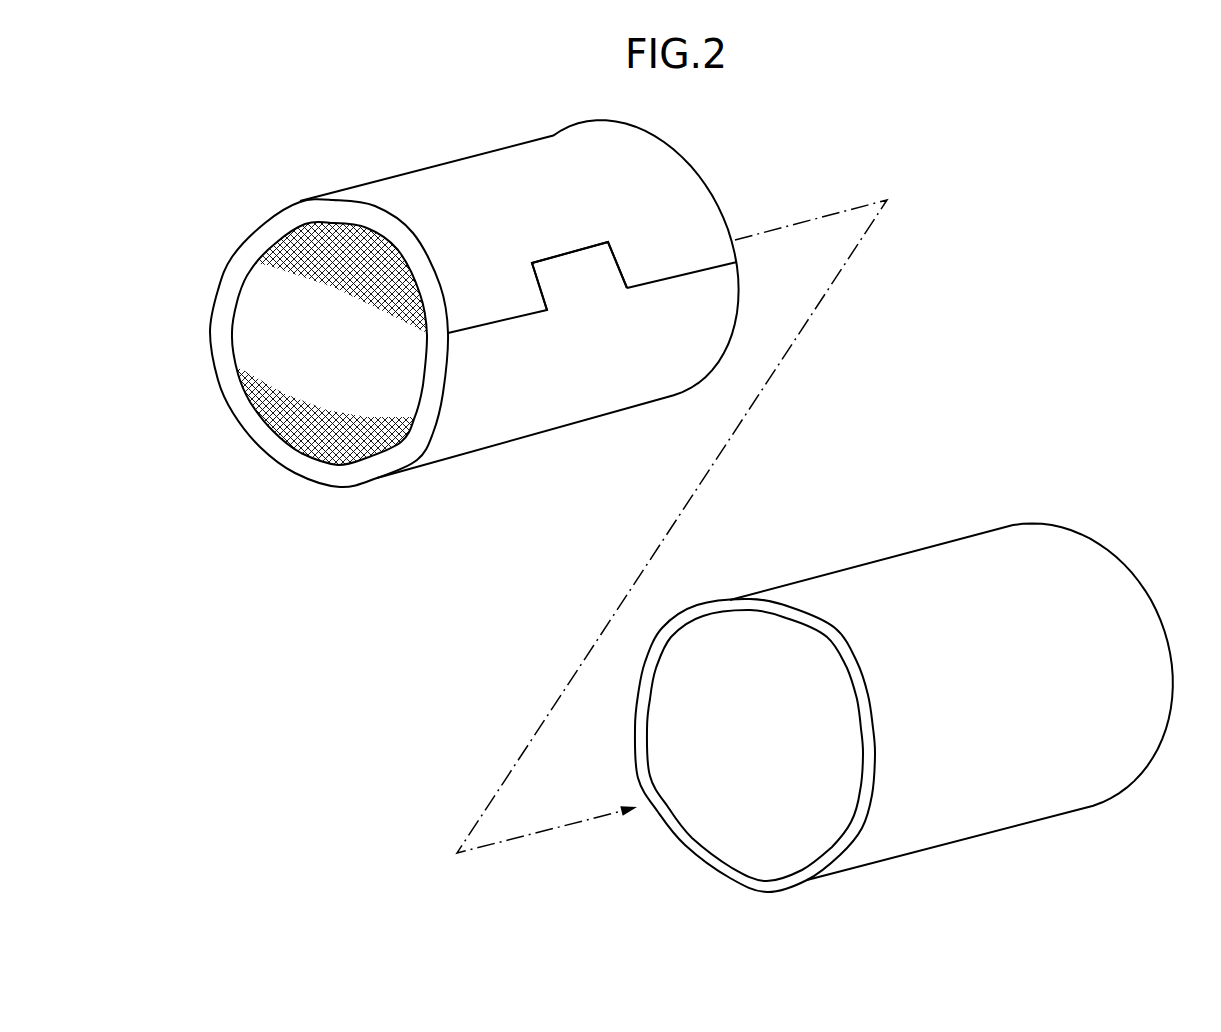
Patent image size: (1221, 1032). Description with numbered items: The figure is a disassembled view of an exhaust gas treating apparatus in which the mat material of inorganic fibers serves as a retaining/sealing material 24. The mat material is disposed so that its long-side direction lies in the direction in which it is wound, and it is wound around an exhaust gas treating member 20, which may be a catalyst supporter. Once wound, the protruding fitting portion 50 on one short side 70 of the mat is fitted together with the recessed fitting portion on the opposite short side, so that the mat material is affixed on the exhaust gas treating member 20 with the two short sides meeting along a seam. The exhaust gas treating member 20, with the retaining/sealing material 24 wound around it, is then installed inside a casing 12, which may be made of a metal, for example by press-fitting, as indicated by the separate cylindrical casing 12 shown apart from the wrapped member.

The casing 12 is at (985, 817).
The exhaust gas treating member 20 is at (252, 331).
The retaining/sealing material 24 is at (553, 143).
The protruding fitting portion 50 is at (583, 277).
The short side 70 is at (682, 270).